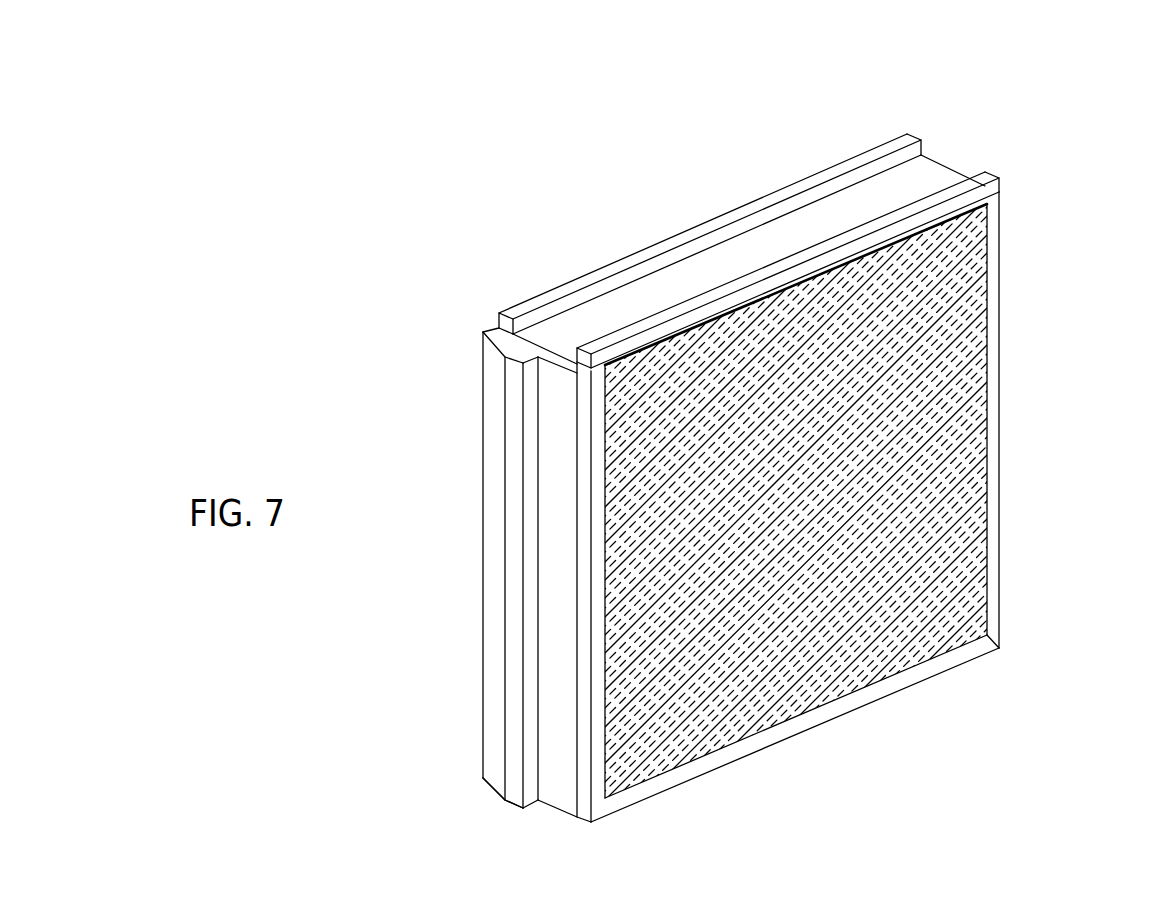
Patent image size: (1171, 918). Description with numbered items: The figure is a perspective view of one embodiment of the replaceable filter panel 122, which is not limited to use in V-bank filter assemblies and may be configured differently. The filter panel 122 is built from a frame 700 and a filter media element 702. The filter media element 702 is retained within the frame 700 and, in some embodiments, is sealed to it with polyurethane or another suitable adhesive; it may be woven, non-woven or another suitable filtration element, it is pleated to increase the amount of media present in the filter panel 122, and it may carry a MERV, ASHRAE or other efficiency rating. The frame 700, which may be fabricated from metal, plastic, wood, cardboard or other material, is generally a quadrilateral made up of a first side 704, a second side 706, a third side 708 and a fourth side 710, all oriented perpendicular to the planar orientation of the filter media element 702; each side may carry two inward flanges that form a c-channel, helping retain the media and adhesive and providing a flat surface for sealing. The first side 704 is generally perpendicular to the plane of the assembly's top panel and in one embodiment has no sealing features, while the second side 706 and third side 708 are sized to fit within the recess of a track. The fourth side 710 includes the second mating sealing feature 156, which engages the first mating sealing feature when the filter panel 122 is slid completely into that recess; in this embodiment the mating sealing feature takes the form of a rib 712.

The replaceable filter panel 122 is at (490, 208).
The frame 700 is at (944, 160).
The filter media element 702 is at (933, 469).
The first side 704 is at (1001, 283).
The second side 706 is at (733, 260).
The third side 708 is at (800, 742).
The fourth side 710 is at (497, 510).
The second mating sealing feature 156 is at (521, 697).
The rib 712 is at (502, 812).